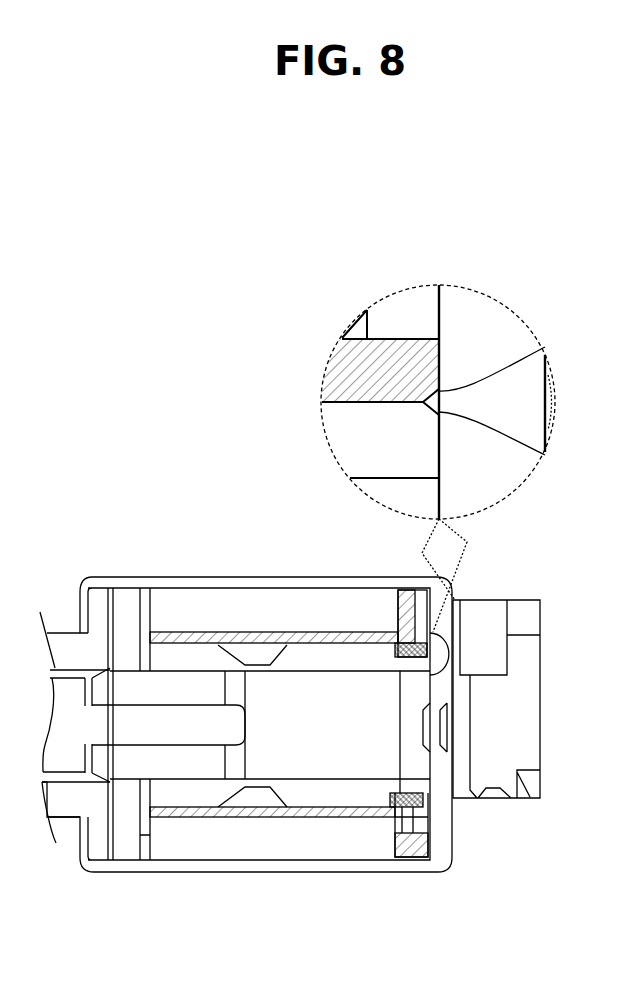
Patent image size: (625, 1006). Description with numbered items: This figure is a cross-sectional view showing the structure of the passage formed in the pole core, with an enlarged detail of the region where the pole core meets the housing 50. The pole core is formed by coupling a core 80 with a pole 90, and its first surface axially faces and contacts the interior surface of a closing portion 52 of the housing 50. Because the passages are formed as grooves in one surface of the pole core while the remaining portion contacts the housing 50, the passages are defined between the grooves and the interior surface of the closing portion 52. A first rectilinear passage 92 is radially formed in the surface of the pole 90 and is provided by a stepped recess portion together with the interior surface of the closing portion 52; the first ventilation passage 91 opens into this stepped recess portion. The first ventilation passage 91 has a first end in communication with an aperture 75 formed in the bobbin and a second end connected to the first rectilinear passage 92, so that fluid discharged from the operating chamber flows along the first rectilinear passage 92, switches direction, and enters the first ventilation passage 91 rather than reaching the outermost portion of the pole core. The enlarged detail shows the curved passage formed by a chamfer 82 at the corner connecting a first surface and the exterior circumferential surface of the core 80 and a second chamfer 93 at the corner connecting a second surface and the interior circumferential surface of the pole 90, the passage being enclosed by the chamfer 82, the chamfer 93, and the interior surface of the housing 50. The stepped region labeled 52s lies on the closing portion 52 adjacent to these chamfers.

The housing 50 is at (248, 577).
The closing portion 52 is at (488, 487).
The stepped portion of side wall 52s is at (430, 386).
The aperture 75 is at (405, 824).
The core 80 is at (350, 447).
The chamfer 82 is at (545, 452).
The pole 90 is at (393, 337).
The first ventilation passage 91 is at (402, 845).
The first rectilinear passage 92 is at (460, 806).
The second chamfer 93 is at (545, 347).